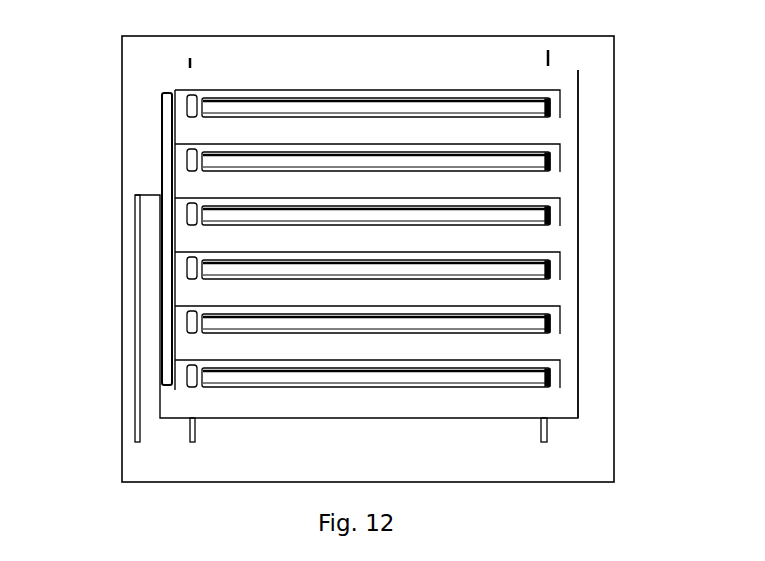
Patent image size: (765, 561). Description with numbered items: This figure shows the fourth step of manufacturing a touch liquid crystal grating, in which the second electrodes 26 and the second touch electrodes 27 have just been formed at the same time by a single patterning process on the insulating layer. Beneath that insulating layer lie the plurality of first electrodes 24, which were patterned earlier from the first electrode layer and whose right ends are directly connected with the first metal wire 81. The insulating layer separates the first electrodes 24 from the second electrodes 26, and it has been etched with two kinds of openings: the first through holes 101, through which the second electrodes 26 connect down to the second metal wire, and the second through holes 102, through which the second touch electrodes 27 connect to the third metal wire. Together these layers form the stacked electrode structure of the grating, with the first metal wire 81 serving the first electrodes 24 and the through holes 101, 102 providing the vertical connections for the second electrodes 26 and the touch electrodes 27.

The first electrode 24 is at (548, 372).
The second electrode 26 is at (548, 156).
The second touch electrode 27 is at (568, 283).
The first metal wire 81 is at (530, 322).
The first through hole 101 is at (187, 268).
The second through hole 102 is at (162, 337).